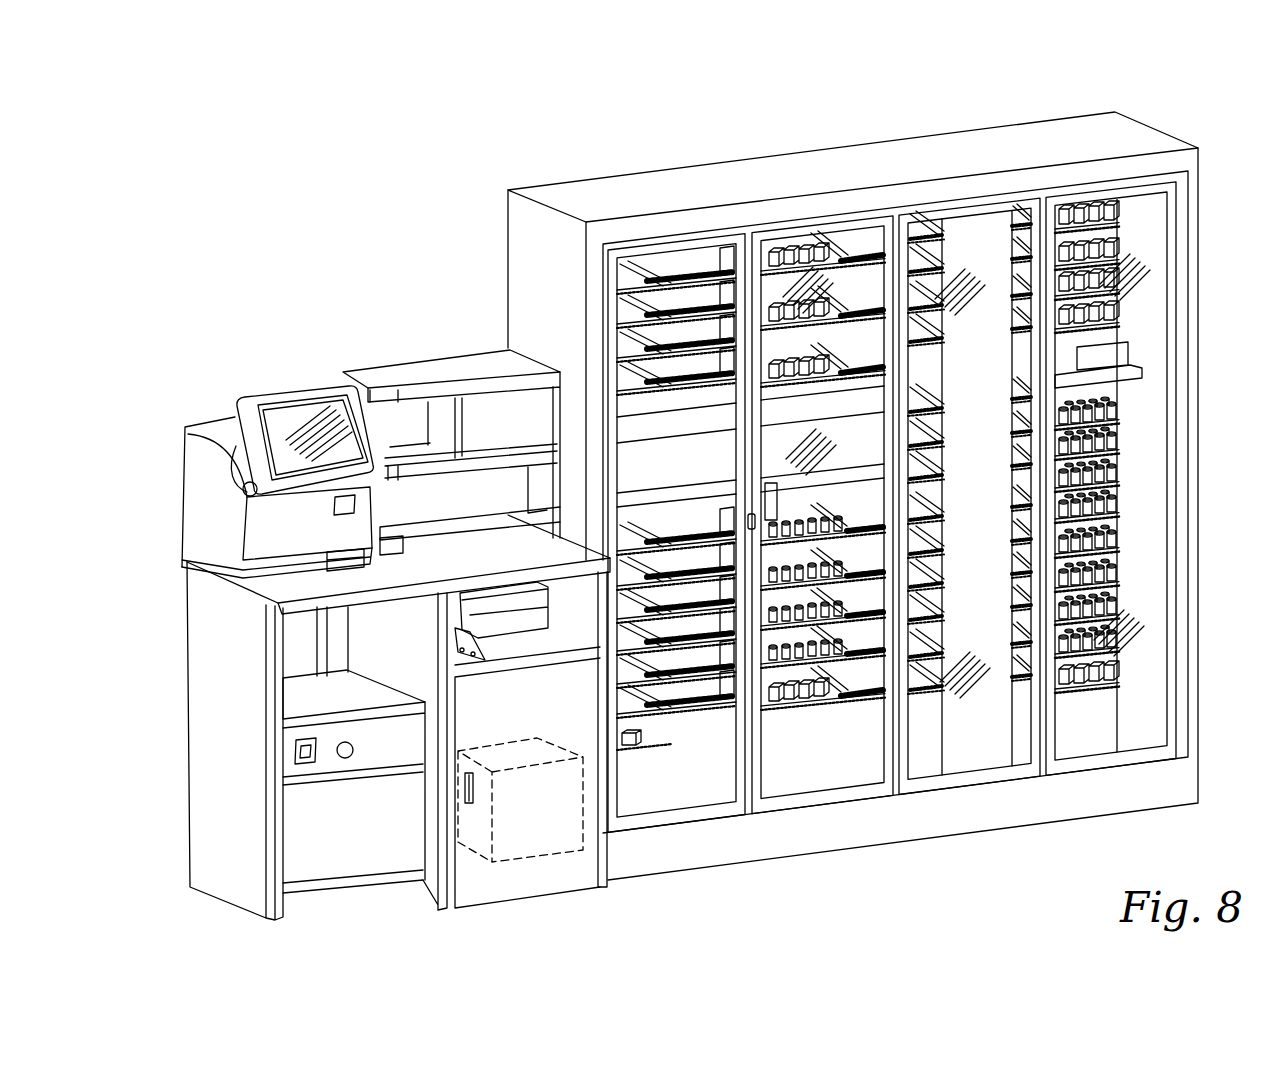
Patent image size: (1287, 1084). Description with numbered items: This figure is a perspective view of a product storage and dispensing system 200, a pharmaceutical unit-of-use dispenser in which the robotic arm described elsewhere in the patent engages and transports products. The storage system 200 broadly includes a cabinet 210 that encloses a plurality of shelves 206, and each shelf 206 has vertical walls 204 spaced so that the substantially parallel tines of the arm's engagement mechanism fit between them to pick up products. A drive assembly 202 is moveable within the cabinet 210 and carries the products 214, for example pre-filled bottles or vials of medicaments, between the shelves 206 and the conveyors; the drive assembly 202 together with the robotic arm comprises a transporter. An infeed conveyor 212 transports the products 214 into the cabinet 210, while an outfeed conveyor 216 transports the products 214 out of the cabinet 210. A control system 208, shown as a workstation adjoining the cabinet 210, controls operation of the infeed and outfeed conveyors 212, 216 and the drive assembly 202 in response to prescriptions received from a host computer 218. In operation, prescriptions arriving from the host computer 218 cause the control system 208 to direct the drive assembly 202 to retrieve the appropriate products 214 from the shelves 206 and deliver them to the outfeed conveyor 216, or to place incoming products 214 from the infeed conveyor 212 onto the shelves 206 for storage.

The product storage and dispensing system 200 is at (418, 153).
The drive assembly 202 is at (962, 222).
The vertical walls 204 is at (633, 257).
The shelf 206 is at (706, 730).
The control system 208 is at (270, 326).
The cabinet 210 is at (600, 158).
The infeed conveyor 212 is at (775, 494).
The products 214 is at (825, 705).
The outfeed conveyor 216 is at (667, 438).
The host computer 218 is at (249, 403).